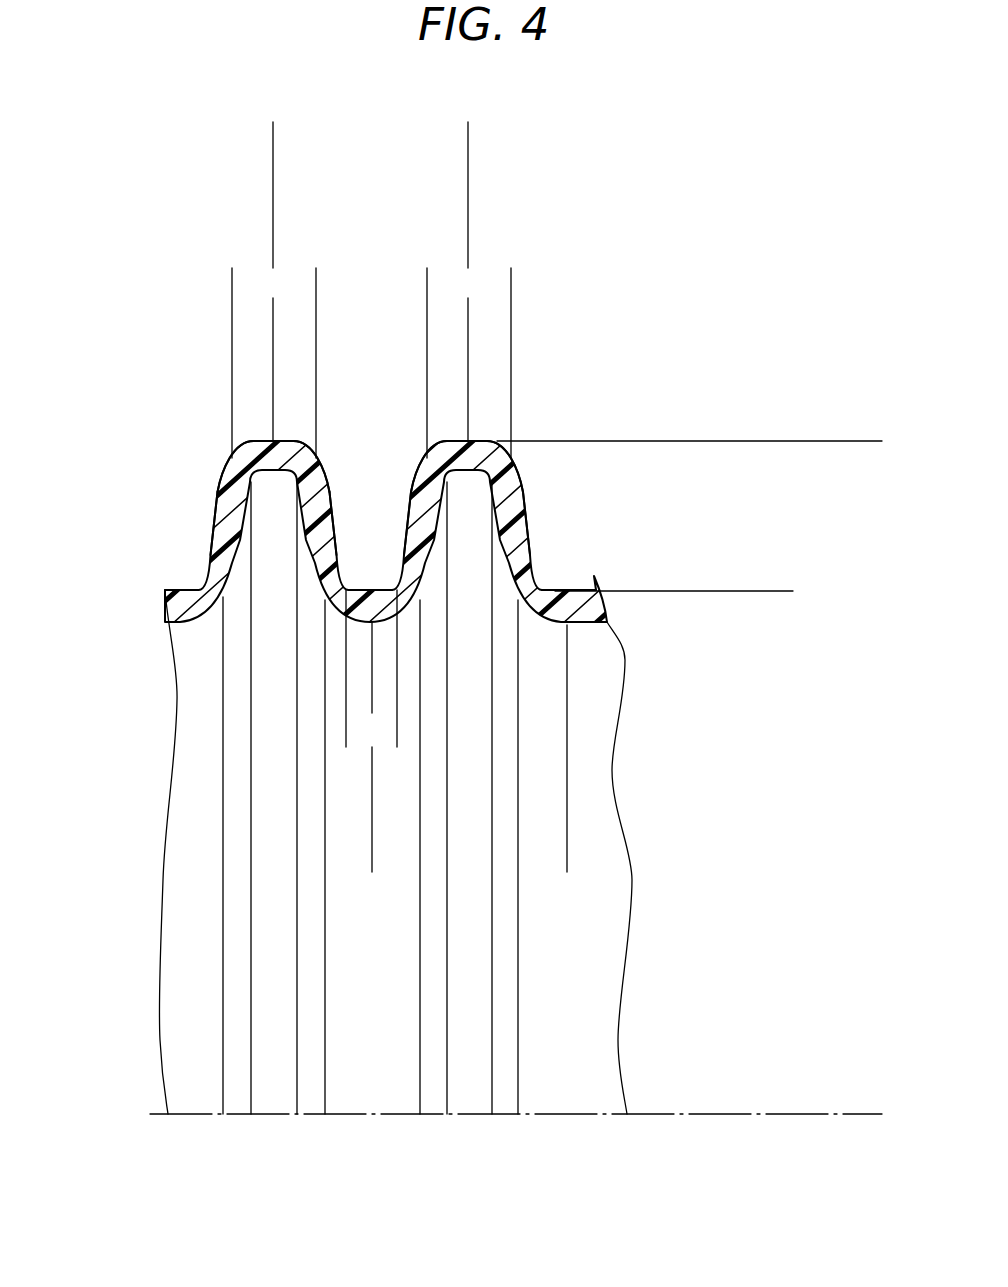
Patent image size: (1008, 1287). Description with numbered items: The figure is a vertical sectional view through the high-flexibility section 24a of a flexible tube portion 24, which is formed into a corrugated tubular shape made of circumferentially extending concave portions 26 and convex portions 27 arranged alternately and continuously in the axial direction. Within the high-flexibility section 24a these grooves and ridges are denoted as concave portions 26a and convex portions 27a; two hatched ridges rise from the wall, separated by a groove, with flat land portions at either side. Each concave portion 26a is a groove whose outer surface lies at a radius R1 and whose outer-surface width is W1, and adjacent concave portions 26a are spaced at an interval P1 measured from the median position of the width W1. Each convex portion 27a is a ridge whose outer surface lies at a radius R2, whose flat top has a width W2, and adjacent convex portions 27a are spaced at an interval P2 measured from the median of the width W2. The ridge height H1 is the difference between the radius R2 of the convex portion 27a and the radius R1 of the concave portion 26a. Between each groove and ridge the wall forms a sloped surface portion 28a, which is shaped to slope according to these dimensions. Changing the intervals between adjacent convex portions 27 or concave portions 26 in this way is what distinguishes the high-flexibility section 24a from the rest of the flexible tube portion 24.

The high-flexibility section 24a is at (132, 482).
The flexible tube portion 24 is at (399, 615).
The concave portion of the high-flexibility section 26a is at (178, 588).
The concave portion 26 is at (386, 547).
The convex portion of the high-flexibility section 27a is at (293, 442).
The convex portion 27 is at (423, 431).
The sloped surface portion 28a is at (412, 498).
The interval between adjacent concave portions P1 is at (372, 860).
The interval between adjacent convex portions P2 is at (468, 137).
The width of the groove portion W1 is at (397, 732).
The width of the top portion of the ridge portion W2 is at (260, 283).
The ridge height H1 is at (782, 442).
The radius of the concave portion R1 is at (782, 591).
The radius of the convex portion R2 is at (863, 442).